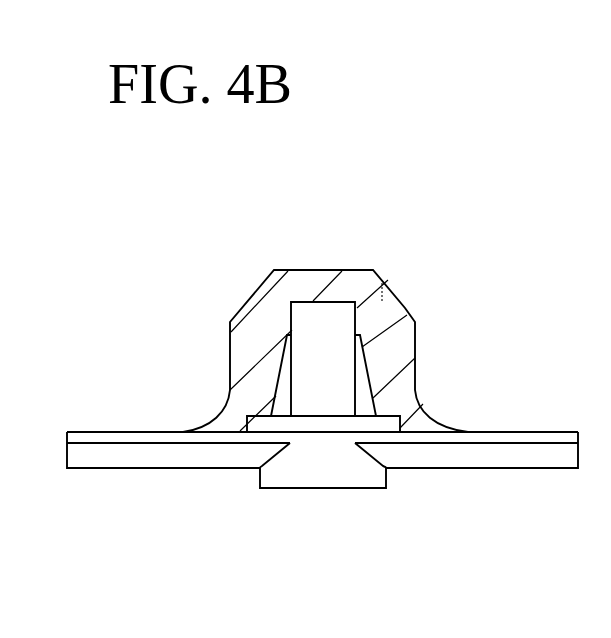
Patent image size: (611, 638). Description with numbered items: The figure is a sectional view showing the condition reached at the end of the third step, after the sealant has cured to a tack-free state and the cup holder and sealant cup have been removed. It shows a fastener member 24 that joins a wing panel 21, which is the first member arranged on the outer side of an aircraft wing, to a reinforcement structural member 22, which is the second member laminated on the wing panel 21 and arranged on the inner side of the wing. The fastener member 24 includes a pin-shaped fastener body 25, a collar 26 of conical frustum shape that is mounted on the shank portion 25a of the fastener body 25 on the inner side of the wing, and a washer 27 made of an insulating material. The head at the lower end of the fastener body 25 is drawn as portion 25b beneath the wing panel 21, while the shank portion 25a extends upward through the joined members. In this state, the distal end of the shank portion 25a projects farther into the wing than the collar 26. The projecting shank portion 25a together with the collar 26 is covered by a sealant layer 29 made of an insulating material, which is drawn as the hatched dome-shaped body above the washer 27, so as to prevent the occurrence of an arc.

The wing panel 21 is at (510, 468).
The reinforcement structural member 22 is at (469, 432).
The fastener member 24 is at (317, 523).
The fastener body 25 is at (367, 490).
The shank portion 25a is at (327, 302).
The lower head of pin 25b is at (272, 490).
The collar 26 is at (362, 346).
The washer 27 is at (386, 416).
The sealant layer 29 is at (388, 280).